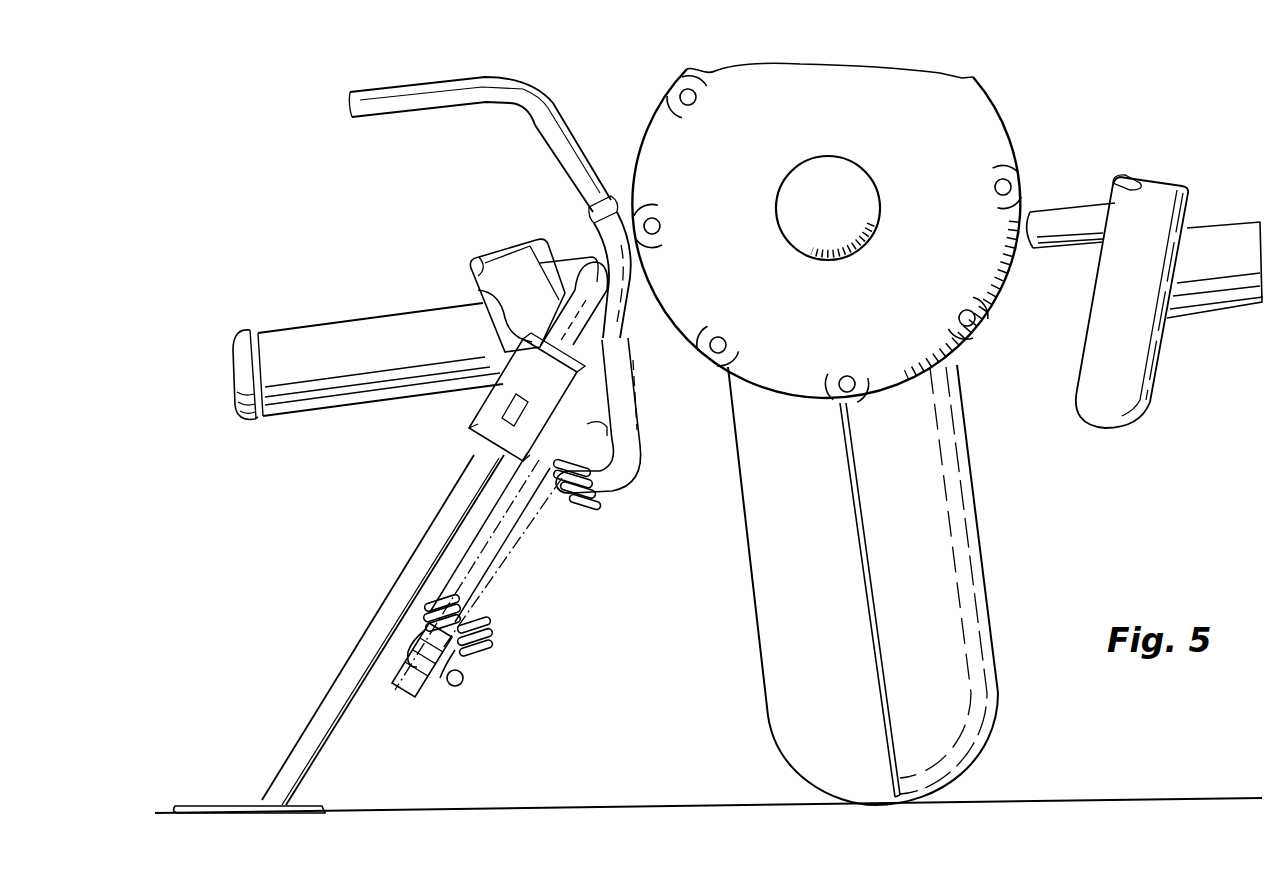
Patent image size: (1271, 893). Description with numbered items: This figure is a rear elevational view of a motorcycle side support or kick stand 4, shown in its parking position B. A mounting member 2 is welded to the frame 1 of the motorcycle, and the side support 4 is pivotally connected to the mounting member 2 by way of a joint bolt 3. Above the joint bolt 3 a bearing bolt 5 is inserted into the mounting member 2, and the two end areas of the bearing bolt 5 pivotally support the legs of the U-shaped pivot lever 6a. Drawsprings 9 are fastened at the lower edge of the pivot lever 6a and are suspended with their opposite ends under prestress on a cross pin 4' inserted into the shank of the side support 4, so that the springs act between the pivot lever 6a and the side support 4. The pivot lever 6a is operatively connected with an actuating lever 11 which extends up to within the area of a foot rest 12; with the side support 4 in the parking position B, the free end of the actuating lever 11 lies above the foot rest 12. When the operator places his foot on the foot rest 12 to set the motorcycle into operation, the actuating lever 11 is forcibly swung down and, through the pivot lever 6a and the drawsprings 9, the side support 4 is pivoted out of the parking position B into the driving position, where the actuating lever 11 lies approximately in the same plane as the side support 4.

The frame 1 is at (520, 276).
The mounting member 2 is at (566, 334).
The joint bolt 3 is at (503, 367).
The side support 4 is at (339, 634).
The cross pin 4' is at (477, 592).
The bearing bolt 5 is at (478, 290).
The pivot lever 6a is at (618, 395).
The drawspring 9 is at (590, 510).
The actuating lever 11 is at (418, 101).
The foot rest 12 is at (318, 352).
The parking position B is at (348, 612).